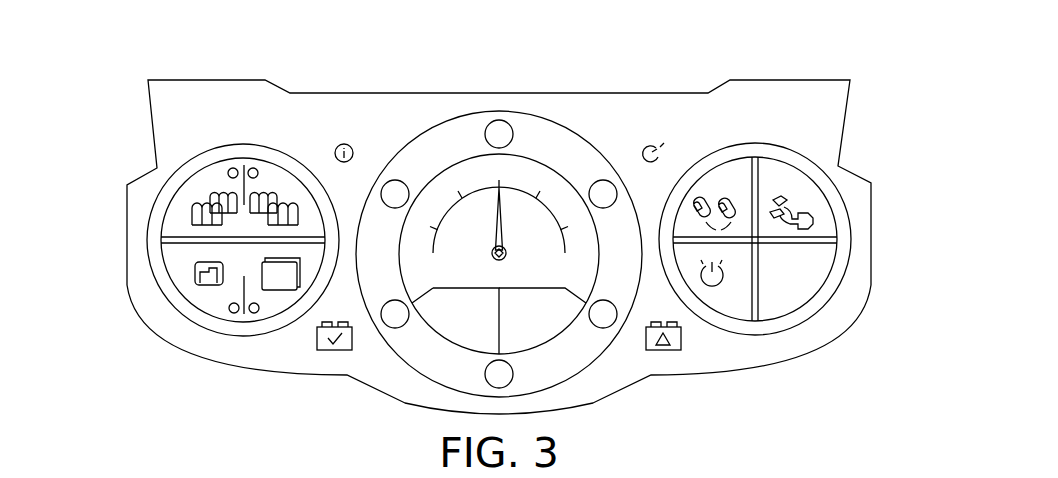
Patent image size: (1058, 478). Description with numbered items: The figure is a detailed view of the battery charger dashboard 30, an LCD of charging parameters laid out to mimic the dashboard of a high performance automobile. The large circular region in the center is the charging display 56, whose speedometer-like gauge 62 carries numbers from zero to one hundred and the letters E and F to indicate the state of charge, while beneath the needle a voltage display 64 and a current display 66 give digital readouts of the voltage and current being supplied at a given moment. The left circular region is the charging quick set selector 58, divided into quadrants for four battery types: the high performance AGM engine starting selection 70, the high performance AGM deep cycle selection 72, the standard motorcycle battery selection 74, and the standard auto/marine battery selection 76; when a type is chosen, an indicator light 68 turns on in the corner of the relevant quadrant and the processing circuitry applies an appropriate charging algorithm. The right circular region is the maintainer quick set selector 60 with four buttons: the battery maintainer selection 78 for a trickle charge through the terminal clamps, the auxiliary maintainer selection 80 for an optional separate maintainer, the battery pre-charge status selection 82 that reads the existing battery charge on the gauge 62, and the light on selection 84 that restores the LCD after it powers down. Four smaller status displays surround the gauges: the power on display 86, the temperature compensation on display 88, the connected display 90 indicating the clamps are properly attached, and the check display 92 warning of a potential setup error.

The dashboard 30 is at (752, 60).
The charging display 56 is at (412, 284).
The charging quick set selector 58 is at (167, 268).
The maintainer quick set selector 60 is at (828, 192).
The gauge 62 is at (540, 168).
The voltage display 64 is at (474, 343).
The current display 66 is at (520, 343).
The indicator light 68 is at (227, 163).
The high performance AGM engine starting selection 70 is at (208, 177).
The high performance AGM deep cycle selection 72 is at (272, 177).
The standard motorcycle battery selection 74 is at (208, 300).
The standard auto/marine battery selection 76 is at (268, 302).
The battery maintainer selection 78 is at (727, 172).
The auxiliary maintainer selection 80 is at (782, 178).
The battery pre-charge status selection 82 is at (775, 310).
The light on selection 84 is at (727, 300).
The power on display 86 is at (352, 146).
The temperature compensation on display 88 is at (664, 143).
The connected display 90 is at (337, 352).
The check display 92 is at (661, 352).